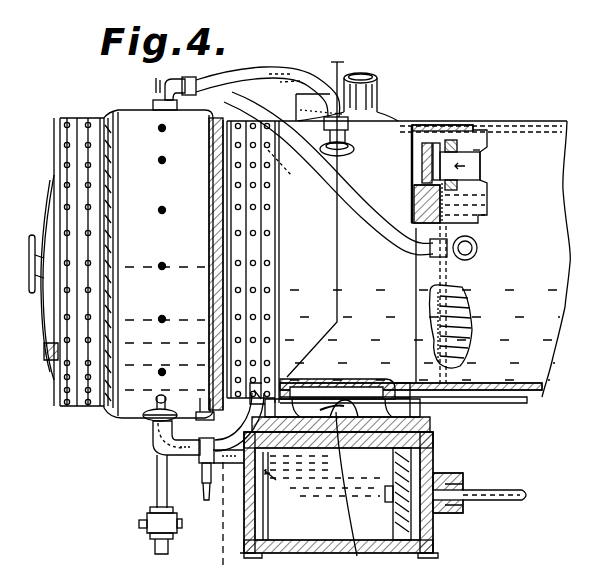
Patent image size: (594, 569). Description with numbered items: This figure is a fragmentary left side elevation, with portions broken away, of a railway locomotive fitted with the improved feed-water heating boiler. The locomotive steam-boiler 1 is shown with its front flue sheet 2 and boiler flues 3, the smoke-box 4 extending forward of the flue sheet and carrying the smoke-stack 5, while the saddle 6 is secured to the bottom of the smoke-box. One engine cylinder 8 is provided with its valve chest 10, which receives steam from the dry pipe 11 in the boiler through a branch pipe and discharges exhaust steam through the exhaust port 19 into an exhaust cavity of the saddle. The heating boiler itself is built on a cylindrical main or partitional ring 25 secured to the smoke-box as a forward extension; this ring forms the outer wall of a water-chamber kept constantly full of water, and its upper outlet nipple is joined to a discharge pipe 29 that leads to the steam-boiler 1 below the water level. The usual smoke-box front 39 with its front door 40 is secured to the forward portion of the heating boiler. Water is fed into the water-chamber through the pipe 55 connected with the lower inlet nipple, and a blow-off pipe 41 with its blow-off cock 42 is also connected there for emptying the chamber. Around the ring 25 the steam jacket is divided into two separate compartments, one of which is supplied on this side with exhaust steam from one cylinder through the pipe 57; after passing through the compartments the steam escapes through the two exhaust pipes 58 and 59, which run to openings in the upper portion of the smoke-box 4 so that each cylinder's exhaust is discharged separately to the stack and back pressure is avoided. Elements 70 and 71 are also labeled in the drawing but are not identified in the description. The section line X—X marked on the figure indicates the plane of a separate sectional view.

The steam-boiler 1 is at (459, 126).
The front flue sheet 2 is at (485, 195).
The boiler flues 3 is at (470, 302).
The smoke-box 4 is at (392, 142).
The smoke-stack 5 is at (364, 76).
The saddle 6 is at (274, 394).
The engine cylinder 8 is at (307, 548).
The valve chest 10 is at (323, 379).
The dry pipe 11 is at (485, 152).
The exhaust port 19 is at (373, 490).
The main or partitional ring 25 is at (66, 155).
The discharge pipe 29 is at (256, 108).
The smoke-box front 39 is at (60, 128).
The front door 40 is at (46, 212).
The blow-off pipe 41 is at (157, 484).
The blow-off cock 42 is at (150, 520).
The pipe 55 is at (197, 425).
The pipe 57 is at (196, 462).
The exhaust pipe 58 is at (268, 82).
The exhaust pipe 59 is at (192, 82).
The shaft 70 is at (593, 466).
The shaft end 71 is at (583, 536).